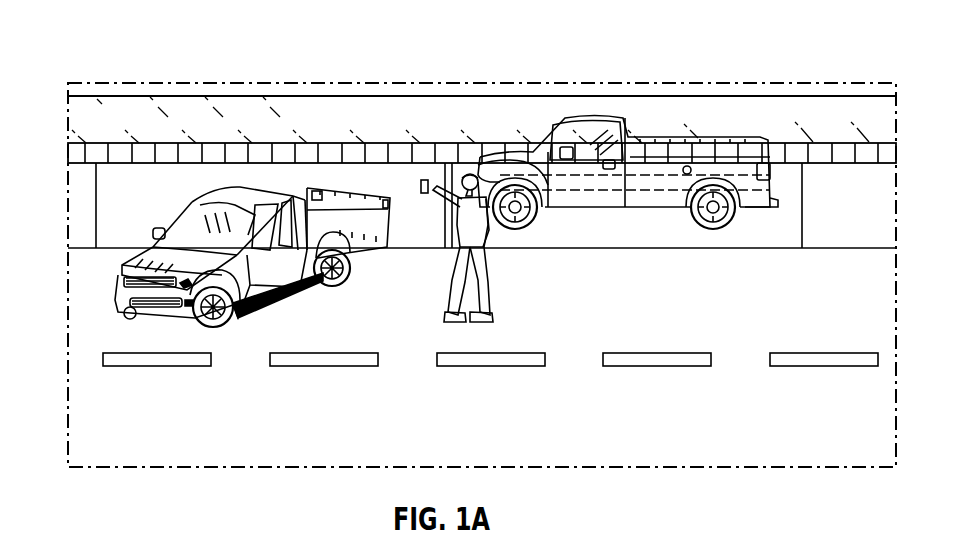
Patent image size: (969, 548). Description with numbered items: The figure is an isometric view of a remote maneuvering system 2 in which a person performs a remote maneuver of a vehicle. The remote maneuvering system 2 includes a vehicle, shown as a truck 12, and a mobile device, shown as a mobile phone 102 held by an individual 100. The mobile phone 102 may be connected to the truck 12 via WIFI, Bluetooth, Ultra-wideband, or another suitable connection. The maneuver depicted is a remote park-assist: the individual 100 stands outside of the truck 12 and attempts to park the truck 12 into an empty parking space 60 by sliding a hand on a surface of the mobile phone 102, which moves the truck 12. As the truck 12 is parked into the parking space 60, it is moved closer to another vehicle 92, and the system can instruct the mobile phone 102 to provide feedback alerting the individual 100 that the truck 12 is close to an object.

The remote maneuvering system 2 is at (103, 52).
The truck 12 is at (100, 305).
The empty parking space 60 is at (138, 203).
The another vehicle 92 is at (736, 130).
The individual 100 is at (492, 297).
The mobile phone 102 is at (430, 175).